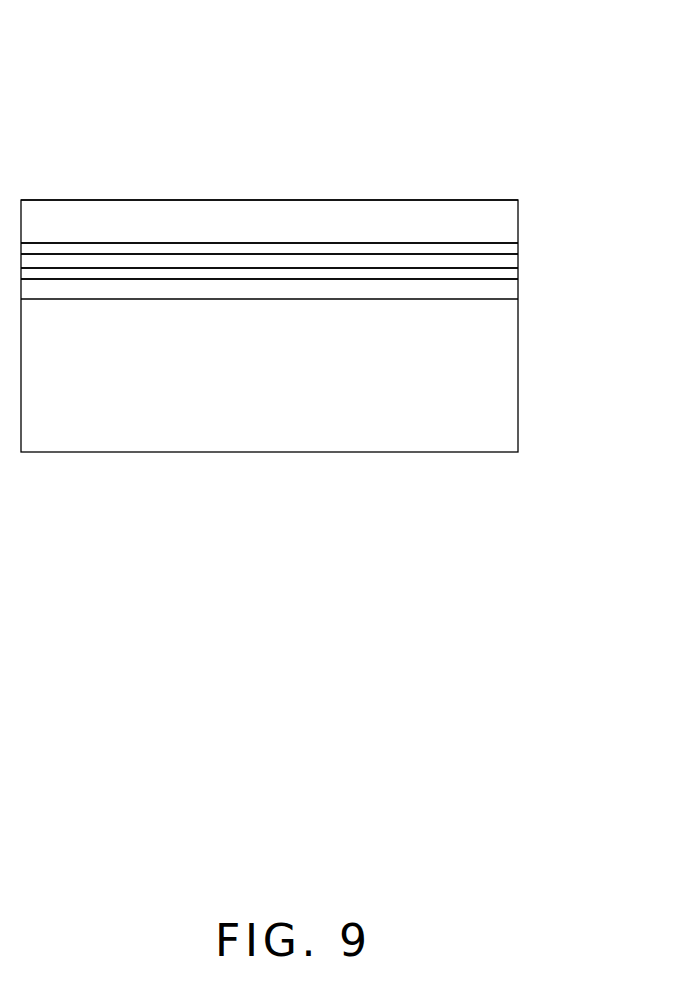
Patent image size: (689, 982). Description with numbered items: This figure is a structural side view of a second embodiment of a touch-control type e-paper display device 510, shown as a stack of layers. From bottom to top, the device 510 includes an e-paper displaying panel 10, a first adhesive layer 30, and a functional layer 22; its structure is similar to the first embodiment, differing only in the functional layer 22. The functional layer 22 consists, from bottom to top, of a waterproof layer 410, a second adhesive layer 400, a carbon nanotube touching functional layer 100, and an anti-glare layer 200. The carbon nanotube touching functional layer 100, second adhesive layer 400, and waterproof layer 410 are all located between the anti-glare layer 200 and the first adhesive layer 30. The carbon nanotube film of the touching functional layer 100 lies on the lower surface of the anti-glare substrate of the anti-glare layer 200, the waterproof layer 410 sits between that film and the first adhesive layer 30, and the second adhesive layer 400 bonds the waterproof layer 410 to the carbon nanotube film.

The touch-control type e-paper display device 510 is at (343, 240).
The anti-glare layer 200 is at (500, 215).
The carbon nanotube touching functional layer 100 is at (508, 250).
The second adhesive layer 400 is at (513, 260).
The waterproof layer 410 is at (318, 280).
The first adhesive layer 30 is at (510, 288).
The functional layer 22 is at (343, 229).
The e-paper displaying panel 10 is at (487, 405).